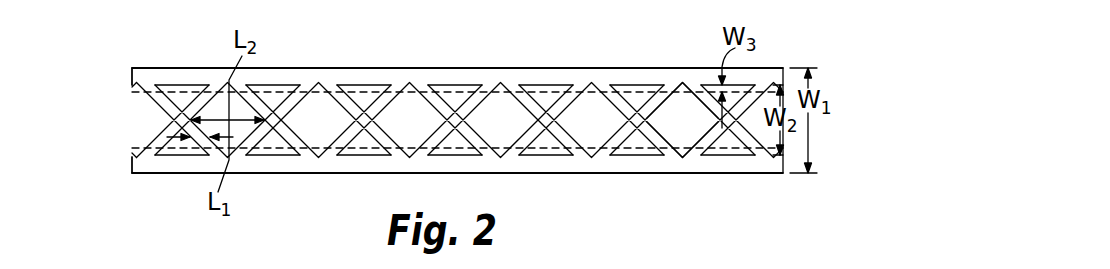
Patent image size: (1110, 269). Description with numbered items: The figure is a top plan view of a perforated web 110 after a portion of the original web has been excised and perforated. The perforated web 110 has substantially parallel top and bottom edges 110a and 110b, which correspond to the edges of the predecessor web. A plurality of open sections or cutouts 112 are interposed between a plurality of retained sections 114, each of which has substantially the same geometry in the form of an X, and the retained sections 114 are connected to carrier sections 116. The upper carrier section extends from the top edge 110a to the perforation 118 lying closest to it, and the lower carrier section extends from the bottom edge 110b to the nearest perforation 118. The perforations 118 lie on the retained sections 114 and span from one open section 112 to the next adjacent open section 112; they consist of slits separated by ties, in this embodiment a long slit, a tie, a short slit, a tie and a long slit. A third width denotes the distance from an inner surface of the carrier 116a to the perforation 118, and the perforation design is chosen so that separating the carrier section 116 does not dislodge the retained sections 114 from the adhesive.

The perforated web 110 is at (770, 50).
The top edge 110a is at (600, 67).
The bottom edge 110b is at (623, 173).
The open sections 112 is at (535, 92).
The retained sections 114 is at (697, 153).
The carrier sections 116 is at (173, 68).
The inner surface of the carrier 116a is at (132, 85).
The perforations 118 is at (395, 90).